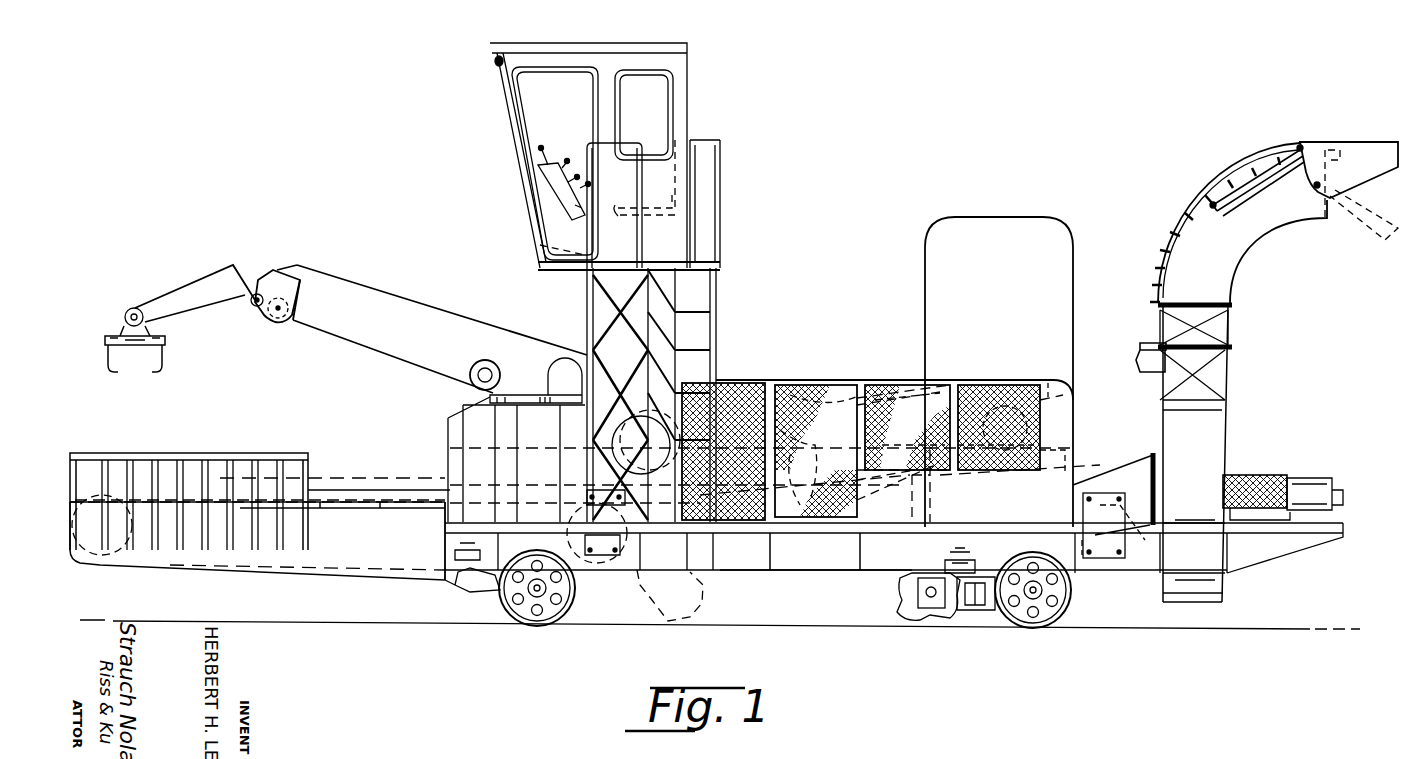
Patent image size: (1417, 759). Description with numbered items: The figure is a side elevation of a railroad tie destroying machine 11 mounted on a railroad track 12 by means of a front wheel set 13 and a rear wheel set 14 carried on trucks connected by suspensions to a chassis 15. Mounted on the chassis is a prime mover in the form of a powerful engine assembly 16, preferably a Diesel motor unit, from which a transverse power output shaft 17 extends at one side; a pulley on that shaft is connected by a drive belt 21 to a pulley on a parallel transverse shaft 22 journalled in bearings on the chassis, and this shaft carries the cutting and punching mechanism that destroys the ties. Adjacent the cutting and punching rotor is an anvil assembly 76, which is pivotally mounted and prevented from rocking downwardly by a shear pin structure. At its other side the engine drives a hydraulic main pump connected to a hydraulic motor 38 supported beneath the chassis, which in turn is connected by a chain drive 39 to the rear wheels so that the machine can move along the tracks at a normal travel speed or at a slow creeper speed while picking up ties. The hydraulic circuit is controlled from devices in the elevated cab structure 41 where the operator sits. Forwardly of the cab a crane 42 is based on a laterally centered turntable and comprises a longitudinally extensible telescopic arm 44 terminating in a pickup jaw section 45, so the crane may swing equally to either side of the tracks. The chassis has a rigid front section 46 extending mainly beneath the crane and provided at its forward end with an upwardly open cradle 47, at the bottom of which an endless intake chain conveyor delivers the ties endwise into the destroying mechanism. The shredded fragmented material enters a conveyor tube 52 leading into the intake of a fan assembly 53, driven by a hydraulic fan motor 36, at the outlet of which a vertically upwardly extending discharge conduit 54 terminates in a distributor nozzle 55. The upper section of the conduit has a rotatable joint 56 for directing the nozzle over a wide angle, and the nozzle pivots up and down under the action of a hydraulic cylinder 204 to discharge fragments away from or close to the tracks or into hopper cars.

The machine 11 is at (807, 380).
The railroad track 12 is at (793, 622).
The front wheel set 13 is at (540, 623).
The rear wheel set 14 is at (1062, 622).
The chassis 15 is at (788, 562).
The engine assembly 16 is at (1058, 250).
The transverse power output shaft 17 is at (1046, 402).
The drive belt 21 is at (888, 400).
The transverse shaft 22 is at (742, 383).
The hydraulic fan motor 36 is at (1318, 478).
The hydraulic motor 38 is at (920, 621).
The chain drive 39 is at (985, 620).
The elevated cab structure 41 is at (662, 100).
The crane 42 is at (400, 284).
The telescopic arm 44 is at (262, 263).
The pickup jaw section 45 is at (165, 348).
The rigid front section 46 is at (380, 553).
The cradle 47 is at (250, 470).
The conveyor tube 52 is at (1118, 483).
The fan assembly 53 is at (1215, 428).
The discharge conduit 54 is at (1230, 286).
The distributor nozzle 55 is at (1355, 148).
The rotatable joint 56 is at (1230, 340).
The anvil assembly 76 is at (650, 620).
The hydraulic cylinder 204 is at (1248, 185).